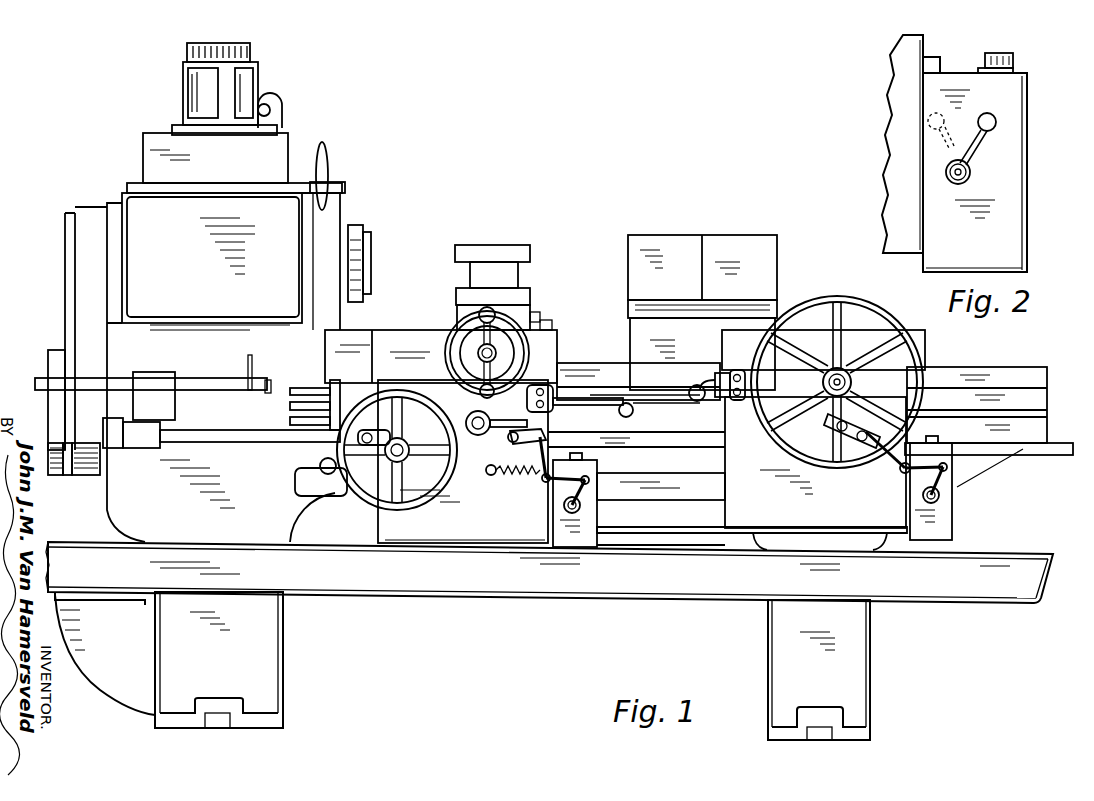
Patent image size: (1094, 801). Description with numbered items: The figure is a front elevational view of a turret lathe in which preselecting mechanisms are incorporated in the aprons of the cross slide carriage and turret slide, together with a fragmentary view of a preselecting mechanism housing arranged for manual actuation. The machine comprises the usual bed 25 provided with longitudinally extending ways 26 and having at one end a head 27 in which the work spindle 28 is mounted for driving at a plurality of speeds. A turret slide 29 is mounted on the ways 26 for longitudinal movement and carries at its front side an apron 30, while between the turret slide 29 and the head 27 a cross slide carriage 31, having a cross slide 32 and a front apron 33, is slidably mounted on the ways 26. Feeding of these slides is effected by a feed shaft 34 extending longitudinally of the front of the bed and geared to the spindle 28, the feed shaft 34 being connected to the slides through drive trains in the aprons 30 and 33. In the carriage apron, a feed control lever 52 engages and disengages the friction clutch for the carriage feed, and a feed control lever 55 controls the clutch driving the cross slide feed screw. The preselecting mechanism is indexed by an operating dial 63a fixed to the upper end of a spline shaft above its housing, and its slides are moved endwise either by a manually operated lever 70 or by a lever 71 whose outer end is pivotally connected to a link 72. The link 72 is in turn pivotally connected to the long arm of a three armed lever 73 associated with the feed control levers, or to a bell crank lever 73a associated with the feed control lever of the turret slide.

In FIG. 1, the bed 25 is at (660, 492).
In FIG. 1, the ways 26 is at (975, 370).
In FIG. 1, the head 27 is at (332, 226).
In FIG. 1, the work spindle 28 is at (368, 257).
In FIG. 1, the turret slide 29 is at (628, 335).
In FIG. 1, the turret slide apron 30 is at (815, 462).
In FIG. 1, the cross slide carriage 31 is at (393, 342).
In FIG. 1, the cross slide 32 is at (527, 297).
In FIG. 1, the cross slide carriage apron 33 is at (463, 461).
In FIG. 1, the feed shaft 34 is at (250, 445).
In FIG. 1, the feed control lever 52 is at (413, 420).
In FIG. 1, the feed control lever 55 is at (597, 405).
In FIG. 1, the operating dial 63a is at (597, 461).
In FIG. 2, the operating dial 63a is at (1015, 70).
In FIG. 2, the manually operated lever 70 is at (983, 138).
In FIG. 1, the lever 71 is at (585, 495).
In FIG. 1, the link 72 is at (562, 483).
In FIG. 1, the three armed lever 73 is at (530, 445).
In FIG. 1, the bell crank lever 73a is at (900, 462).